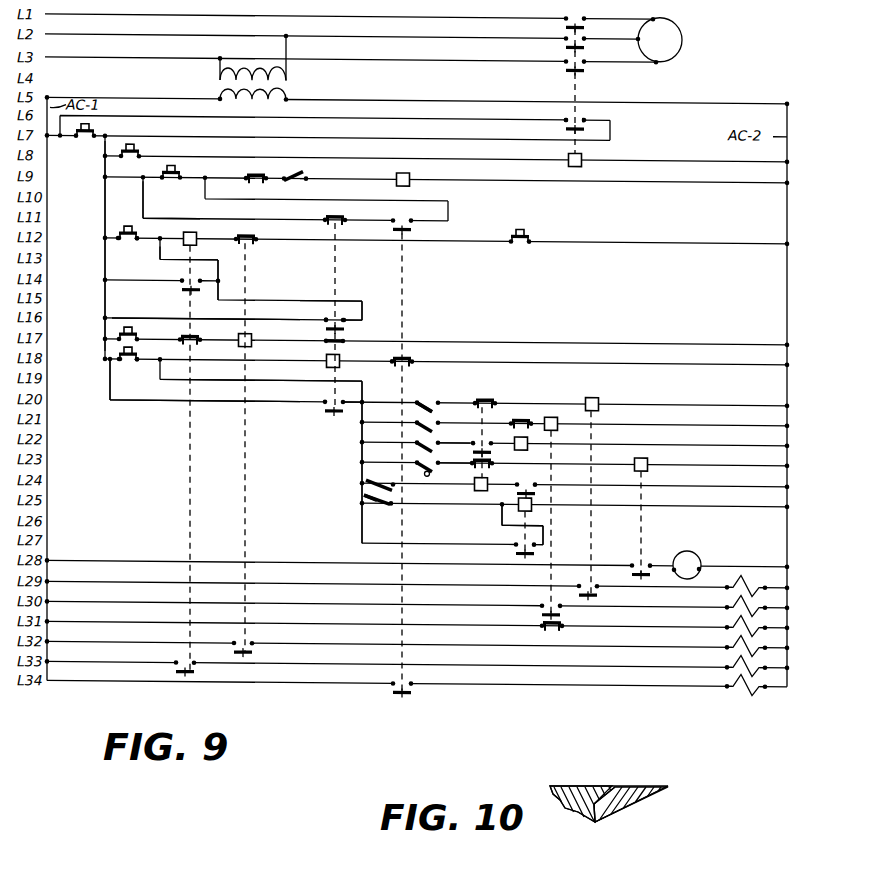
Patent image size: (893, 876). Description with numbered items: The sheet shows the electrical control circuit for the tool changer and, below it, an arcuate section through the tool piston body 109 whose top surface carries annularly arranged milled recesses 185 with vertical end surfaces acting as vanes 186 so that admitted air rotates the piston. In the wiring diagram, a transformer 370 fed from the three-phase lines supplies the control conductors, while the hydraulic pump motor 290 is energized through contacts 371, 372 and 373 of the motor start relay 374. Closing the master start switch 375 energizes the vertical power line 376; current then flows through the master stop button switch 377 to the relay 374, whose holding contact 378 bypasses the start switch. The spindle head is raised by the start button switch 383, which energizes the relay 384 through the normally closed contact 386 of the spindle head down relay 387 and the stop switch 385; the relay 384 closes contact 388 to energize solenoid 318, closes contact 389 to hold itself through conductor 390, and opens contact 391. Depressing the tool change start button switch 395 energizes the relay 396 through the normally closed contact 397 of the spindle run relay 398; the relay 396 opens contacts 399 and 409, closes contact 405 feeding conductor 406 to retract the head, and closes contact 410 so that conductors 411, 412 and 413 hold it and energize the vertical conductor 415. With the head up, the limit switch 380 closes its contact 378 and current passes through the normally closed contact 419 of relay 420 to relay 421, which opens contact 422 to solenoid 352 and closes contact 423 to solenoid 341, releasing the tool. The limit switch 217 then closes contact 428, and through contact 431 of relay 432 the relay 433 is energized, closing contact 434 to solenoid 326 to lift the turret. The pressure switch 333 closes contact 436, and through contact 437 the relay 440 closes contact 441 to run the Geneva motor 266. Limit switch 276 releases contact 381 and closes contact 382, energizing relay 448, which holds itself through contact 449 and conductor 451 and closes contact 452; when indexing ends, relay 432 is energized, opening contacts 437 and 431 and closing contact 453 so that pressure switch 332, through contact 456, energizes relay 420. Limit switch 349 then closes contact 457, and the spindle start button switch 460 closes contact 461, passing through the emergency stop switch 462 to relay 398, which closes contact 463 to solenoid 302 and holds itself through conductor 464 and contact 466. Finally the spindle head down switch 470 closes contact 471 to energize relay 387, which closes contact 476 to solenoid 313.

In FIG. 9, the hydraulic pump motor 290 is at (672, 33).
In FIG. 9, the contact of motor start relay 371 is at (560, 30).
In FIG. 9, the contact of motor start relay 372 is at (560, 47).
In FIG. 9, the contact of motor start relay 373 is at (560, 69).
In FIG. 9, the transformer 370 is at (292, 78).
In FIG. 9, the contact 378 is at (563, 126).
In FIG. 9, the motor start relay 374 is at (582, 158).
In FIG. 9, the master start switch 375 is at (98, 128).
In FIG. 9, the master stop button switch 377 is at (143, 152).
In FIG. 9, the spindle start button switch 460 is at (160, 170).
In FIG. 9, the contact of spindle start button switch 461 is at (168, 178).
In FIG. 9, the spindle emergency stop switch 462 is at (256, 171).
In FIG. 9, the contact of limit switch 457 is at (303, 174).
In FIG. 9, the limit switch 349 is at (305, 183).
In FIG. 9, the spindle run relay 398 is at (410, 178).
In FIG. 9, the vertical power line 376 is at (105, 203).
In FIG. 9, the conductor 464 is at (143, 205).
In FIG. 9, the contact of relay 396 409 is at (327, 214).
In FIG. 9, the contact of relay 398 466 is at (412, 228).
In FIG. 9, the start button switch 383 is at (129, 237).
In FIG. 9, the relay 384 is at (194, 243).
In FIG. 9, the contact of spindle head down relay 386 is at (257, 234).
In FIG. 9, the stop switch 385 is at (514, 244).
In FIG. 9, the conductor 390 is at (168, 259).
In FIG. 9, the contact of relay 384 389 is at (181, 288).
In FIG. 9, the spindle head down switch 470 is at (162, 312).
In FIG. 9, the contact of spindle head down switch 471 is at (117, 333).
In FIG. 9, the contact of relay 384 391 is at (191, 342).
In FIG. 9, the spindle head down relay 387 is at (253, 344).
In FIG. 9, the contact of relay 396 405 is at (326, 316).
In FIG. 9, the contact of relay 396 399 is at (327, 337).
In FIG. 9, the conductor 406 is at (375, 297).
In FIG. 9, the tool change start button switch 395 is at (131, 359).
In FIG. 9, the relay 396 is at (326, 363).
In FIG. 9, the contact of spindle run relay 397 is at (413, 359).
In FIG. 9, the conductor 413 is at (243, 380).
In FIG. 9, the conductor 411 is at (173, 401).
In FIG. 9, the contact of relay 396 410 is at (324, 407).
In FIG. 9, the conductor 412 is at (350, 405).
In FIG. 9, the vertical conductor 415 is at (378, 547).
In FIG. 9, the limit switch 217 is at (414, 409).
In FIG. 9, the contact of limit switch 217 428 is at (445, 390).
In FIG. 9, the contact of relay 432 431 is at (503, 390).
In FIG. 9, the relay 433 is at (600, 401).
In FIG. 9, the contact of relay 420 419 is at (530, 412).
In FIG. 9, the relay 421 is at (565, 401).
In FIG. 9, the limit switch 380 is at (414, 430).
In FIG. 9, the contact of pressure switch 332 456 is at (439, 438).
In FIG. 9, the contact of relay 432 453 is at (486, 446).
In FIG. 9, the relay 420 is at (530, 441).
In FIG. 9, the pressure switch 332 is at (413, 451).
In FIG. 9, the pressure switch 333 is at (420, 468).
In FIG. 9, the contact of relay 432 437 is at (490, 464).
In FIG. 9, the contact of pressure switch 333 436 is at (438, 464).
In FIG. 9, the relay 440 is at (648, 462).
In FIG. 9, the contact of limit switch 276 381 is at (362, 479).
In FIG. 9, the relay 432 is at (477, 486).
In FIG. 9, the contact of relay 448 452 is at (540, 486).
In FIG. 9, the limit switch 276 is at (364, 497).
In FIG. 9, the contact of limit switch 276 382 is at (378, 507).
In FIG. 9, the relay 448 is at (533, 509).
In FIG. 9, the conductor 451 is at (500, 524).
In FIG. 9, the contact of relay 448 449 is at (515, 548).
In FIG. 9, the contact of relay 440 441 is at (638, 560).
In FIG. 9, the Geneva motor 266 is at (691, 556).
In FIG. 9, the contact of relay 433 434 is at (600, 590).
In FIG. 9, the contact of relay 421 423 is at (562, 612).
In FIG. 9, the contact of relay 421 422 is at (548, 626).
In FIG. 9, the solenoid coil 326 is at (738, 585).
In FIG. 9, the solenoid 341 is at (740, 605).
In FIG. 9, the solenoid 352 is at (740, 627).
In FIG. 9, the solenoid 313 is at (740, 647).
In FIG. 9, the solenoid 318 is at (740, 667).
In FIG. 9, the solenoid 302 is at (746, 686).
In FIG. 9, the contact of relay 387 476 is at (256, 651).
In FIG. 9, the contact of relay 384 388 is at (177, 668).
In FIG. 9, the contact of relay 398 463 is at (390, 689).
In FIG. 10, the vanes 186 is at (600, 787).
In FIG. 10, the milled recesses 185 is at (622, 790).
In FIG. 10, the piston body 109 is at (650, 800).